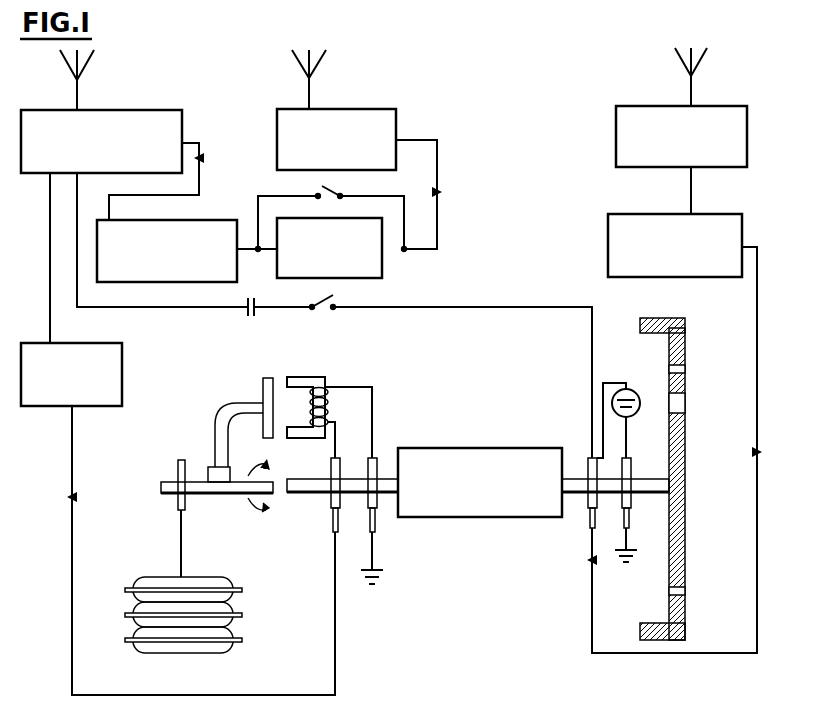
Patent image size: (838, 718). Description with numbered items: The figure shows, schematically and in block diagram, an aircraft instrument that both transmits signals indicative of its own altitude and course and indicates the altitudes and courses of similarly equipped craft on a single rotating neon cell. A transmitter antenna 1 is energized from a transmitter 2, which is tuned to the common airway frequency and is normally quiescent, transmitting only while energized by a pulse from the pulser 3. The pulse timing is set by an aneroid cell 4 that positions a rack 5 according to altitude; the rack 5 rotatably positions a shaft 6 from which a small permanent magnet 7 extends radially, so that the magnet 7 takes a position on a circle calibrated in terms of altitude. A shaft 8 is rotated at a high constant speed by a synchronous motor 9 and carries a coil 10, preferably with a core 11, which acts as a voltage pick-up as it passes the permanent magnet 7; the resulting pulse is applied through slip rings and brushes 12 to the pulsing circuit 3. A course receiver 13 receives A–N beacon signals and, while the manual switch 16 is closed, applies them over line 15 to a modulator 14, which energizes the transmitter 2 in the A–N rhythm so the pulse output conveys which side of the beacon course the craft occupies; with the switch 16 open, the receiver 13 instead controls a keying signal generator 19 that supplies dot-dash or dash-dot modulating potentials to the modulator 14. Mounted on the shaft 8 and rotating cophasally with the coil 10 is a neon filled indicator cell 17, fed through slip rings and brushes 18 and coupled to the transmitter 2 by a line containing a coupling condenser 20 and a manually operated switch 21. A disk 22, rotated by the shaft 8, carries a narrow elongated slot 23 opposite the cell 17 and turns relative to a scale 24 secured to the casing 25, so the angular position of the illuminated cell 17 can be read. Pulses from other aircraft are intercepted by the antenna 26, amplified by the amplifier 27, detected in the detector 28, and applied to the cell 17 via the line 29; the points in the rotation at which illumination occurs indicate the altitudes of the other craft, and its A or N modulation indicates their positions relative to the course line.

The transmitter antenna 1 is at (68, 62).
The transmitter 2 is at (114, 118).
The pulser 3 is at (117, 380).
The aneroid cell 4 is at (140, 584).
The rack 5 is at (178, 469).
The shaft 6 is at (202, 488).
The permanent magnet 7 is at (263, 398).
The shaft 8 is at (382, 478).
The synchronous motor 9 is at (475, 448).
The coil 10 is at (329, 403).
The core 11 is at (305, 377).
The slip rings and brushes 12 is at (341, 500).
The course receiver 13 is at (360, 109).
The modulator 14 is at (214, 219).
The line 15 is at (370, 188).
The manual switch 16 is at (318, 191).
The neon filled indicator cell 17 is at (624, 389).
The slip rings and brushes 18 is at (622, 502).
The keying signal generator 19 is at (383, 259).
The coupling condenser 20 is at (248, 306).
The manually operated switch 21 is at (322, 300).
The disk 22 is at (685, 445).
The slot 23 is at (669, 404).
The scale 24 is at (685, 366).
The casing 25 is at (678, 318).
The antenna 26 is at (699, 54).
The amplifier 27 is at (616, 124).
The detector 28 is at (608, 234).
The line 29 is at (757, 541).